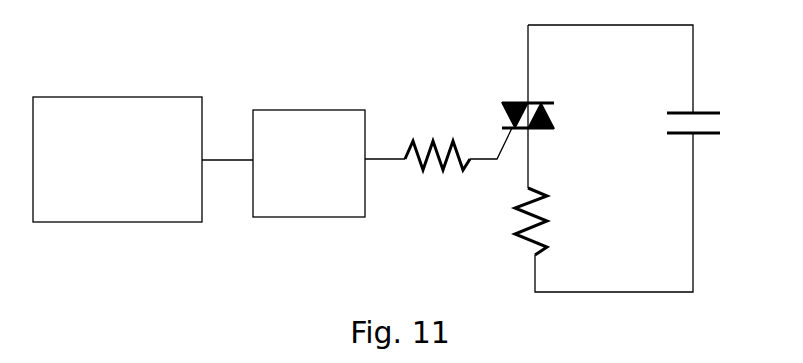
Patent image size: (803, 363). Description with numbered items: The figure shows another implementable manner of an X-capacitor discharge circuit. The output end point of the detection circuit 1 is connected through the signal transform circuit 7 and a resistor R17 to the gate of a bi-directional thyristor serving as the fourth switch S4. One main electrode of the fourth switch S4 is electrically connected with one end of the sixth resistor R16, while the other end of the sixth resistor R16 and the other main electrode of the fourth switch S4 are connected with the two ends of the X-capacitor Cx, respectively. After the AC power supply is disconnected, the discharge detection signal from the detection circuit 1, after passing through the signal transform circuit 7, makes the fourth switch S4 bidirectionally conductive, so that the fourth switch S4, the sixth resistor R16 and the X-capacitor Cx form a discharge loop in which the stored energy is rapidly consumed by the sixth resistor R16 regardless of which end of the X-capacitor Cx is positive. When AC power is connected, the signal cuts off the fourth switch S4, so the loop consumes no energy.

The detection circuit 1 is at (92, 223).
The signal transform circuit 7 is at (293, 217).
The resistor R17 is at (450, 140).
The fourth switch S4 is at (515, 103).
The sixth resistor R16 is at (515, 228).
The X-capacitor Cx is at (713, 132).